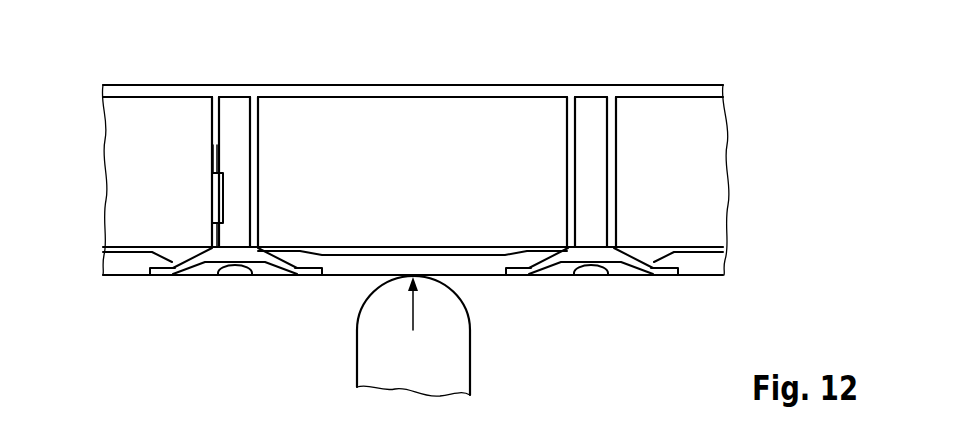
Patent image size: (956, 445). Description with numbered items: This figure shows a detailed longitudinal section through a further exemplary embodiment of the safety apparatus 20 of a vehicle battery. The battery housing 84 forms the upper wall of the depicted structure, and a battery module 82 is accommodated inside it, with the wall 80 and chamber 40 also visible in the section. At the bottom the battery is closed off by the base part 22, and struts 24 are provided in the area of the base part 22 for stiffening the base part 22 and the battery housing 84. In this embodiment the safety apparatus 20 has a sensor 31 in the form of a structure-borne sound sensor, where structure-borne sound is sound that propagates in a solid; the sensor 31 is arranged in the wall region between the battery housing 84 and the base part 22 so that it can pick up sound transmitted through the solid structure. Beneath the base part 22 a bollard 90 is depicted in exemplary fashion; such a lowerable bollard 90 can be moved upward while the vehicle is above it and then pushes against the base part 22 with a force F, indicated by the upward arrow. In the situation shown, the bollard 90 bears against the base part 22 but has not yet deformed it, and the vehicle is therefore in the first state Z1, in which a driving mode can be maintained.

The housing 80 is at (163, 72).
The battery housing 84 is at (358, 84).
The battery module 82 is at (502, 112).
The receiving chamber 40 is at (120, 173).
The sensor 31 is at (215, 196).
The base part 22 is at (693, 278).
The strut 24 is at (195, 263).
The safety apparatus 20 is at (417, 337).
The bollard 90 is at (457, 363).
The force F is at (414, 310).
The first state Z1 is at (733, 70).